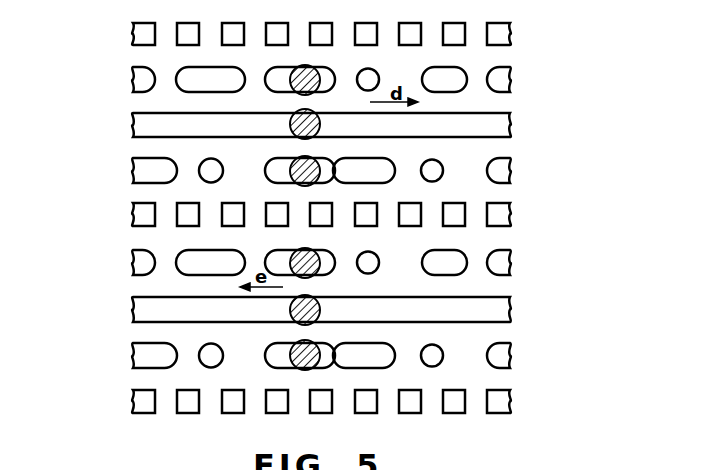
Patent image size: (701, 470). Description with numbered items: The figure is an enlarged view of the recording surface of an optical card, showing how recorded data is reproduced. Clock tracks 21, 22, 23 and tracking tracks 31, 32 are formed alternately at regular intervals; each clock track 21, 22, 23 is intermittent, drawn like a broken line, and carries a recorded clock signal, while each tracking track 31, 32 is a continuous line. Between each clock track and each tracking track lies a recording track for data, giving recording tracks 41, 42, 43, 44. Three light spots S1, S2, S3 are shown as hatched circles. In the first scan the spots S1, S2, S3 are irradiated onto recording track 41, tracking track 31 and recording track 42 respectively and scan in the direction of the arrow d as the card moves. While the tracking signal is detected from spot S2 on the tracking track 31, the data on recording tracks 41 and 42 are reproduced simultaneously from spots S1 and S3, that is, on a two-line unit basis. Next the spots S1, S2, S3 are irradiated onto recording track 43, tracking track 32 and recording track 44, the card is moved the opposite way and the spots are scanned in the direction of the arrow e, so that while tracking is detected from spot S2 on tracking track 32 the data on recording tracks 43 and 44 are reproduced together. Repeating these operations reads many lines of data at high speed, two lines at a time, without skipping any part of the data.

The clock track 21 is at (122, 20).
The clock track 22 is at (122, 200).
The clock track 23 is at (122, 388).
The tracking track 31 is at (122, 113).
The tracking track 32 is at (122, 298).
The recording track 41 is at (520, 43).
The recording track 42 is at (520, 140).
The recording track 43 is at (520, 228).
The recording track 44 is at (520, 323).
The spot S1 is at (314, 67).
The spot S2 is at (314, 111).
The spot S3 is at (302, 157).